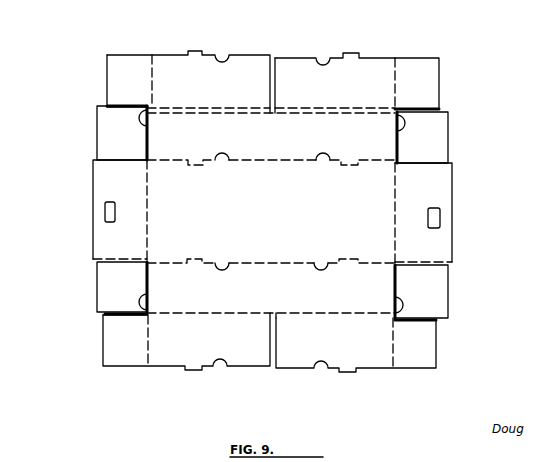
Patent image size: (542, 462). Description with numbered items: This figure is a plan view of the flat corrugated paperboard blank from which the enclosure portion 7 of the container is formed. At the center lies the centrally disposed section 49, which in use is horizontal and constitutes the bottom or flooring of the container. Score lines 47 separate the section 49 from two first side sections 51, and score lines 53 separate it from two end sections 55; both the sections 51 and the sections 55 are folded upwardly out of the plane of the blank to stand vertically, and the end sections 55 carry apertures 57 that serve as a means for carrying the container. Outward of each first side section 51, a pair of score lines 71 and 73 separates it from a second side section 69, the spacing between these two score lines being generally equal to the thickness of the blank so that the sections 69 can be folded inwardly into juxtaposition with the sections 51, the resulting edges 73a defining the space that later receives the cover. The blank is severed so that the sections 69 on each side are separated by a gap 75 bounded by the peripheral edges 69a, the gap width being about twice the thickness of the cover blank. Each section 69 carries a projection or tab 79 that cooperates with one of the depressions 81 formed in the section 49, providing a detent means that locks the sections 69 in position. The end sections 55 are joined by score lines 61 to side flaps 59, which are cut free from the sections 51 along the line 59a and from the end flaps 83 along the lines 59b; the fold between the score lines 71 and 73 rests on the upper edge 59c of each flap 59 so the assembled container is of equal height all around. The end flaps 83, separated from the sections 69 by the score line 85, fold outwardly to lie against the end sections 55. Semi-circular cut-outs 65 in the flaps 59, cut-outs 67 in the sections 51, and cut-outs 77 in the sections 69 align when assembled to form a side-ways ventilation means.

The enclosure portion 7 is at (75, 267).
The score lines 47 is at (279, 164).
The centrally disposed section 49 is at (267, 210).
The first side sections 51 is at (268, 214).
The score lines 53 is at (147, 217).
The end sections 55 is at (272, 211).
The apertures 57 is at (103, 209).
The side flaps 59 is at (272, 212).
The severing line 59a is at (146, 144).
The severing lines 59b is at (132, 105).
The upper edge of side flap 59c is at (97, 128).
The score lines 61 is at (134, 162).
The cut-outs 65 is at (139, 122).
The cut-outs 67 is at (226, 153).
The second side sections 69 is at (271, 211).
The peripheral edges 69a is at (271, 71).
The score line 71 is at (317, 113).
The score line 73 is at (289, 110).
The edges 73a is at (396, 112).
The gap 75 is at (272, 368).
The cut-outs 77 is at (320, 61).
The projection or tab 79 is at (194, 51).
The depressions 81 is at (197, 166).
The end flaps 83 is at (272, 213).
The score line 85 is at (152, 80).